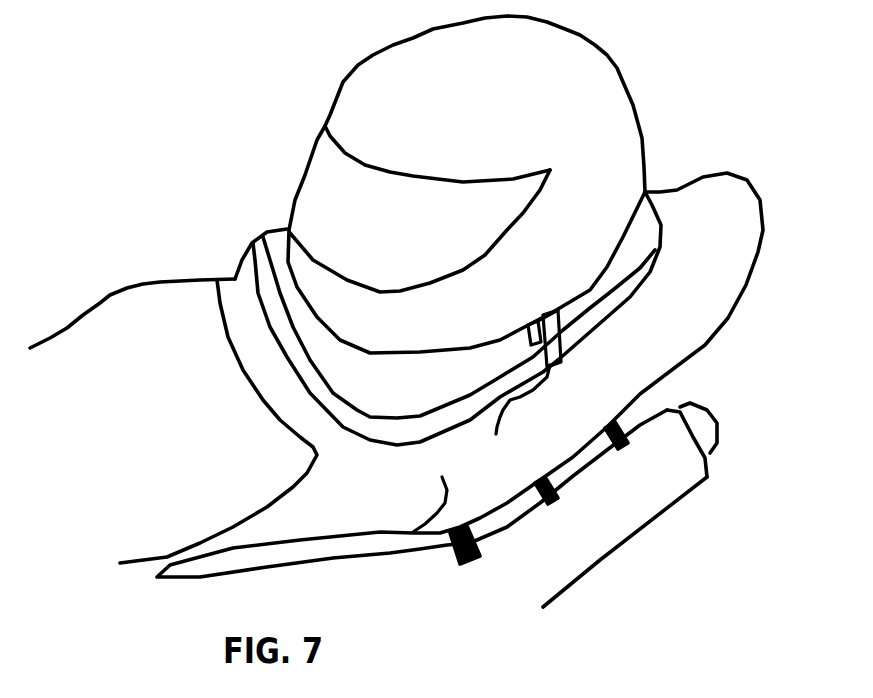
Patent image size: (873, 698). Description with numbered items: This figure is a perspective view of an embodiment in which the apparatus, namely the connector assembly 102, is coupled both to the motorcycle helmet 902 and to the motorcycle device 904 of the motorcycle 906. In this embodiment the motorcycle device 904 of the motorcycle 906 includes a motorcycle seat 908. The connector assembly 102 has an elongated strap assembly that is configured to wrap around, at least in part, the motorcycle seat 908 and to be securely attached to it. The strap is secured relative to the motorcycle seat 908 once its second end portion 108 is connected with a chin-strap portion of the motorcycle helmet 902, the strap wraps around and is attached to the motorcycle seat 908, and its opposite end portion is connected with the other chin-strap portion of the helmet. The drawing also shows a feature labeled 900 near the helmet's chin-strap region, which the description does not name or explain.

The motorcycle helmet 902 is at (524, 94).
The motorcycle device 904 is at (441, 294).
The motorcycle seat 908 is at (433, 302).
The motorcycle 906 is at (132, 289).
The chin strap buckle 900 is at (479, 372).
The connector assembly 102 is at (548, 523).
The second end portion 108 is at (466, 489).